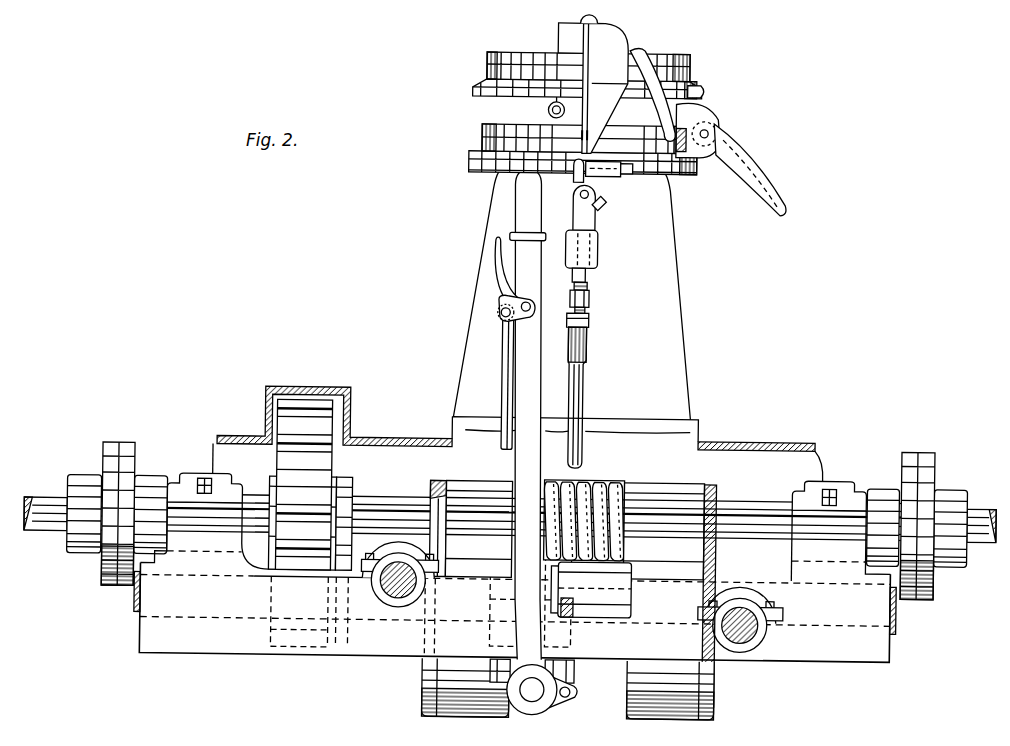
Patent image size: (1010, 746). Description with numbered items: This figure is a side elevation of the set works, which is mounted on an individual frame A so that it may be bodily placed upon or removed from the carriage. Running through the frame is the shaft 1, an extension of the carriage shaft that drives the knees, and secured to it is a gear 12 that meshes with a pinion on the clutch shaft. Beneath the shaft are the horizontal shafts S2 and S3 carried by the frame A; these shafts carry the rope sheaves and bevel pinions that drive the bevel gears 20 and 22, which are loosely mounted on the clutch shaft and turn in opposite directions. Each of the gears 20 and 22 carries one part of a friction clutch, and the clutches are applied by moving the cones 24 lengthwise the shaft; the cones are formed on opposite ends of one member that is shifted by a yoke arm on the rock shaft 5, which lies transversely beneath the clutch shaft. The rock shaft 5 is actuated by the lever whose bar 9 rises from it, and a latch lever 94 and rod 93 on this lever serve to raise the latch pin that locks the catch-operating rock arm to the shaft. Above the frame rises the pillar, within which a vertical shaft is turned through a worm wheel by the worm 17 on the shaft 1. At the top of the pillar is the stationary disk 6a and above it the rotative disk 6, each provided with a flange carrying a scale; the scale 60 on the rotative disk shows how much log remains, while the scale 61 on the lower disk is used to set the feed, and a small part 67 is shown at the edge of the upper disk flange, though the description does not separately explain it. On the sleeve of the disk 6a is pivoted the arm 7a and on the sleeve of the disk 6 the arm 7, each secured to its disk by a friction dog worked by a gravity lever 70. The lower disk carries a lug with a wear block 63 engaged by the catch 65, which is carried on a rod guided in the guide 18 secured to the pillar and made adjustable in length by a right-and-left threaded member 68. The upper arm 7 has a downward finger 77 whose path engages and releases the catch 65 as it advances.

The shaft 1 is at (377, 505).
The rock shaft 5 is at (536, 690).
The disk 6 is at (572, 62).
The stationary disk 6a is at (570, 138).
The arm 7 is at (617, 84).
The arm 7a is at (646, 94).
The bar 9 is at (525, 414).
The gear 12 is at (330, 415).
The worm 17 is at (592, 484).
The guide 18 is at (596, 253).
The bevel gear 20 is at (437, 486).
The bevel gear 22 is at (714, 500).
The cone 24 is at (591, 590).
The scale 60 is at (503, 45).
The scale 61 is at (472, 153).
The wear block 63 is at (596, 164).
The catch 65 is at (573, 180).
The latch 67 is at (700, 96).
The right-and-left threaded member 68 is at (588, 297).
The gravity lever 70 is at (756, 165).
The finger 77 is at (583, 136).
The rod 93 is at (492, 383).
The latch lever 94 is at (496, 268).
The frame A is at (809, 658).
The horizontal shaft S2 is at (390, 582).
The horizontal shaft S3 is at (746, 640).